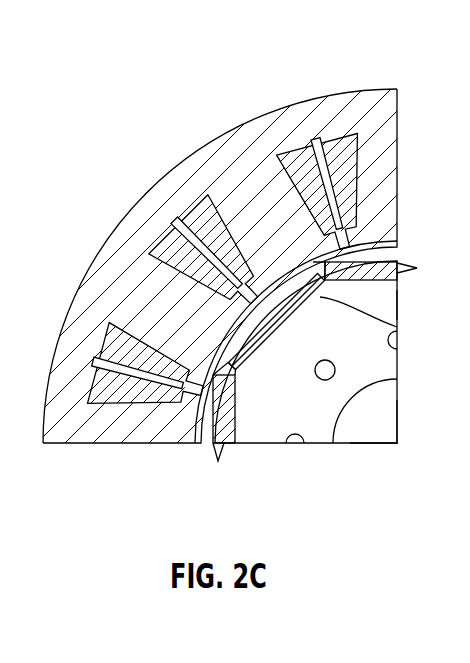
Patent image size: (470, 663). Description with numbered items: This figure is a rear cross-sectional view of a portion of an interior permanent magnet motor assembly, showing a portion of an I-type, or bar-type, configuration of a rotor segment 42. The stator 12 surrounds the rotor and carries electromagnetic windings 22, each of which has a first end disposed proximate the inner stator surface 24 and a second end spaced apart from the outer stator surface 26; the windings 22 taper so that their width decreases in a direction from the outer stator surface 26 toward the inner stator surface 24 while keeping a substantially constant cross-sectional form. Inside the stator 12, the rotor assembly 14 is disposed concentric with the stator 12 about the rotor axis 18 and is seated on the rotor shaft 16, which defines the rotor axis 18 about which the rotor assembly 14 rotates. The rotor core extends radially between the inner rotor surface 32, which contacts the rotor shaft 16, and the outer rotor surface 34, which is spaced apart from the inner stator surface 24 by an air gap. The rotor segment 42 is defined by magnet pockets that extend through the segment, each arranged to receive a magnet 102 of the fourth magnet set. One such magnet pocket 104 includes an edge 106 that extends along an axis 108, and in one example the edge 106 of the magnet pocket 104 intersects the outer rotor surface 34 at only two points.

The stator 12 is at (235, 331).
The outer stator surface 26 is at (347, 91).
The electromagnetic windings 22 is at (207, 182).
The inner stator surface 24 is at (385, 252).
The outer rotor surface 34 is at (412, 268).
The second rotor segment 42 is at (396, 313).
The magnet 102 is at (396, 327).
The inner rotor surface 32 is at (393, 375).
The rotor shaft 16 is at (235, 331).
The rotor axis 18 is at (380, 408).
The rotor assembly 14 is at (290, 449).
The axis 108 is at (240, 418).
The magnet pocket 104 is at (295, 323).
The edge 106 is at (265, 350).